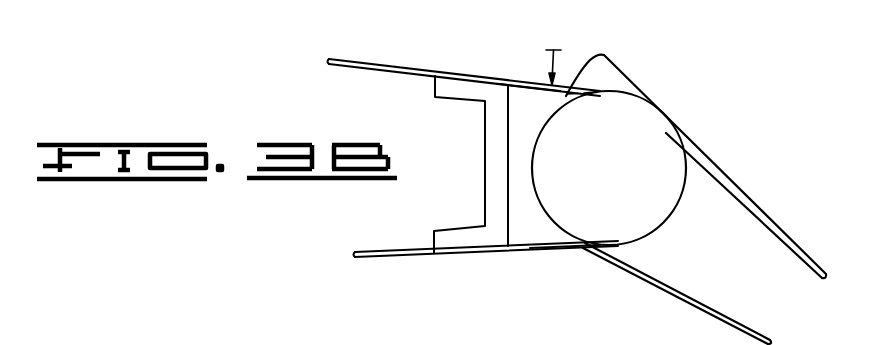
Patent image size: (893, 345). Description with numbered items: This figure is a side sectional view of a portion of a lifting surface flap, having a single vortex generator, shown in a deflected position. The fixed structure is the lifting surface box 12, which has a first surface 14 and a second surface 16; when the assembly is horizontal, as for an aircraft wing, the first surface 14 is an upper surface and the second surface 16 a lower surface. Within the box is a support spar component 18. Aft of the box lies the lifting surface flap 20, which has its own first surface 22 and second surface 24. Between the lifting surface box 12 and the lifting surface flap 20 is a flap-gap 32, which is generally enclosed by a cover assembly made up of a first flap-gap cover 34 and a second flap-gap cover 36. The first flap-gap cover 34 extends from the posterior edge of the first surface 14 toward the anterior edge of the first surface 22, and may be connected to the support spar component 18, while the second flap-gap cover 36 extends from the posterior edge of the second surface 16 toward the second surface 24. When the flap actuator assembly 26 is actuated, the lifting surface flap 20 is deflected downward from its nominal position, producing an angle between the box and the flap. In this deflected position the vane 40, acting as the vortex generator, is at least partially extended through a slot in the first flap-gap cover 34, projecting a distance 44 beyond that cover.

The lifting surface box 12 is at (200, 341).
The first surface 14 is at (394, 66).
The second surface 16 is at (407, 258).
The support spar component 18 is at (495, 222).
The lifting surface flap 20 is at (719, 158).
The first surface 22 is at (762, 212).
The second surface 24 is at (722, 314).
The flap actuator assembly 26 is at (630, 152).
The flap-gap 32 is at (525, 109).
The first flap-gap cover 34 is at (526, 82).
The second flap-gap cover 36 is at (556, 250).
The vane 40 is at (622, 62).
The distance 44 is at (558, 63).